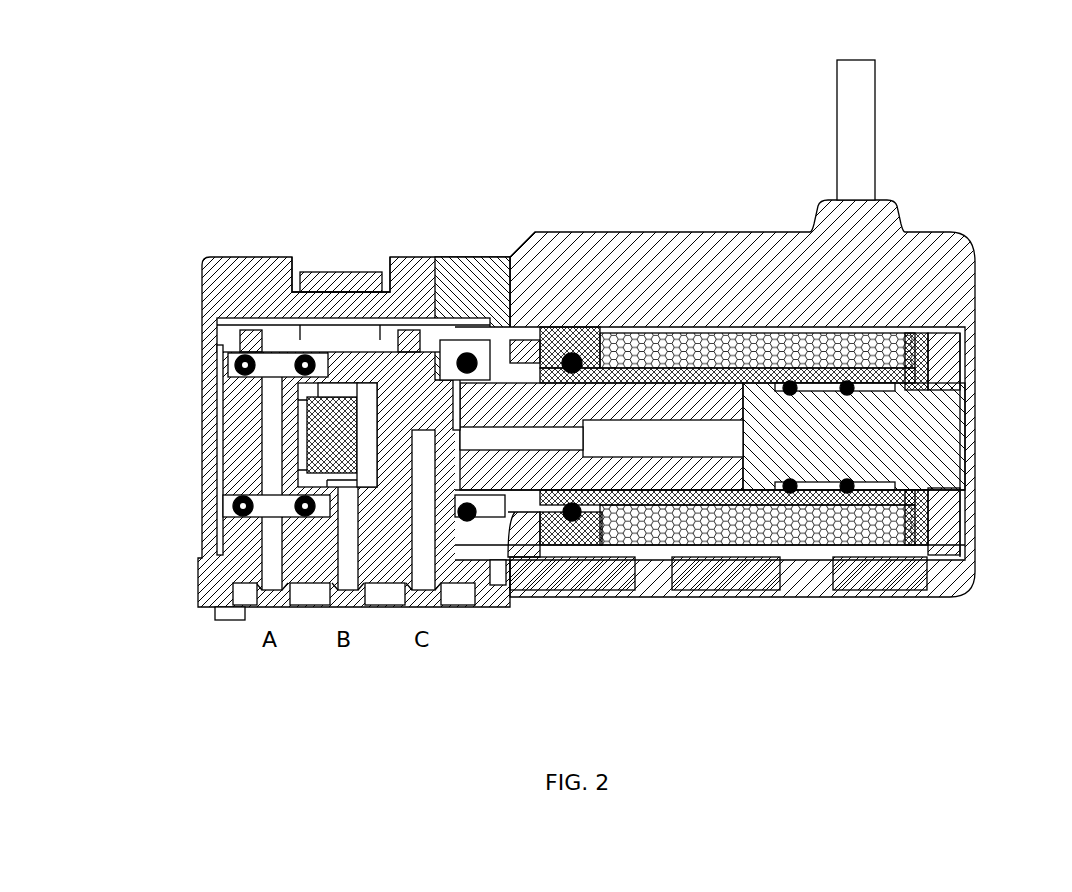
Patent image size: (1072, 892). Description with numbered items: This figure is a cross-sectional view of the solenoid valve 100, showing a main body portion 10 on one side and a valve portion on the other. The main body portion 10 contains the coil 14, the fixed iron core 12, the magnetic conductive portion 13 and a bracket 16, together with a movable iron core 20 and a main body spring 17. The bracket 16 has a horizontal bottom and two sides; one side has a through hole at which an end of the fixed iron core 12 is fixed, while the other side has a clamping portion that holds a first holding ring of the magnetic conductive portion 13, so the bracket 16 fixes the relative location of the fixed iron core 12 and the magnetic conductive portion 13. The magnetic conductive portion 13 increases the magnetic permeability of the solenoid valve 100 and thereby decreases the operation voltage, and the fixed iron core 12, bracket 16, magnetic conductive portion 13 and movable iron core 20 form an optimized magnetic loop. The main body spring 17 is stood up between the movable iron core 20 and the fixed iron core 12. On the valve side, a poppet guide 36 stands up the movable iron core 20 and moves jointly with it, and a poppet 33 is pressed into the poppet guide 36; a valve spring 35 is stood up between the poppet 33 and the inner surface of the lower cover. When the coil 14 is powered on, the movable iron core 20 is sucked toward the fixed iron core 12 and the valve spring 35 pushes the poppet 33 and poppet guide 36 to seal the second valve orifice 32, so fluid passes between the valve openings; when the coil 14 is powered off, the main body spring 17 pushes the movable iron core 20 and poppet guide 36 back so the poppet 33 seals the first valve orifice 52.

The solenoid valve 100 is at (90, 60).
The main body portion 10 is at (735, 100).
The fixed iron core 12 is at (950, 455).
The magnetic conductive portion 13 is at (495, 560).
The coil 14 is at (717, 357).
The bracket 16 is at (880, 585).
The main body spring 17 is at (628, 440).
The movable iron core 20 is at (550, 520).
The second valve orifice 32 is at (373, 435).
The poppet 33 is at (338, 383).
The valve spring 35 is at (292, 372).
The poppet guide 36 is at (372, 392).
The first valve orifice 52 is at (290, 440).